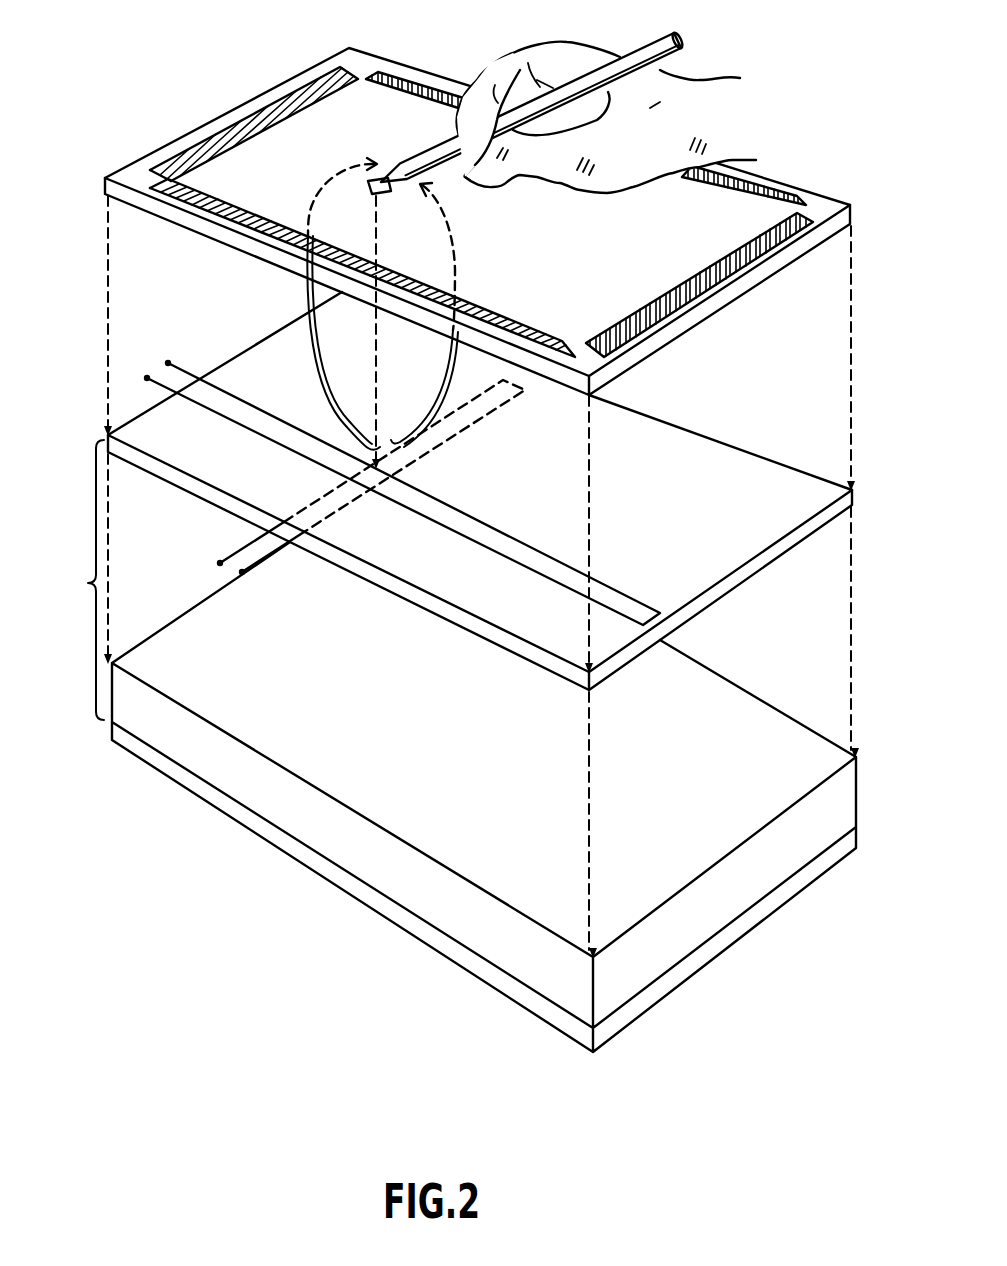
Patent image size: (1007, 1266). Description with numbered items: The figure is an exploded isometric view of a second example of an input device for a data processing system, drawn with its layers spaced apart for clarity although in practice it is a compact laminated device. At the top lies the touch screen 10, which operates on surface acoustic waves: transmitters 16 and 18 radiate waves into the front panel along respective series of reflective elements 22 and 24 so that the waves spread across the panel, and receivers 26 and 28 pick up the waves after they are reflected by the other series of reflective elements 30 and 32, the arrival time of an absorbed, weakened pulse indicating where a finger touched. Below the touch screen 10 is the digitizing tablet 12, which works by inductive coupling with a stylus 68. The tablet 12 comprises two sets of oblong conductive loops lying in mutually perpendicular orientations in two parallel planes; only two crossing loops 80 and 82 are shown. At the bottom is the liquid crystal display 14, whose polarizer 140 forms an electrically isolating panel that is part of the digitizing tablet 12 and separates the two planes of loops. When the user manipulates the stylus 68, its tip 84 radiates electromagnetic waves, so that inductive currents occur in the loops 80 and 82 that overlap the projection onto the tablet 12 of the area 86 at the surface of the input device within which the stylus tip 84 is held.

The touch screen 10 is at (71, 163).
The digitizing tablet 12 is at (71, 458).
The liquid crystal display 14 is at (86, 583).
The transmitter 16 is at (152, 170).
The transmitter 18 is at (369, 78).
The series of reflective elements 22 is at (293, 92).
The series of reflective elements 24 is at (437, 73).
The receiver 26 is at (583, 348).
The receiver 28 is at (173, 182).
The series of reflective elements 30 is at (733, 270).
The series of reflective elements 32 is at (271, 227).
The stylus 68 is at (647, 53).
The conductive loop 80 is at (166, 364).
The conductive loop 82 is at (220, 563).
The stylus tip 84 is at (406, 167).
The area 86 is at (373, 191).
The polarizer 140 is at (678, 623).